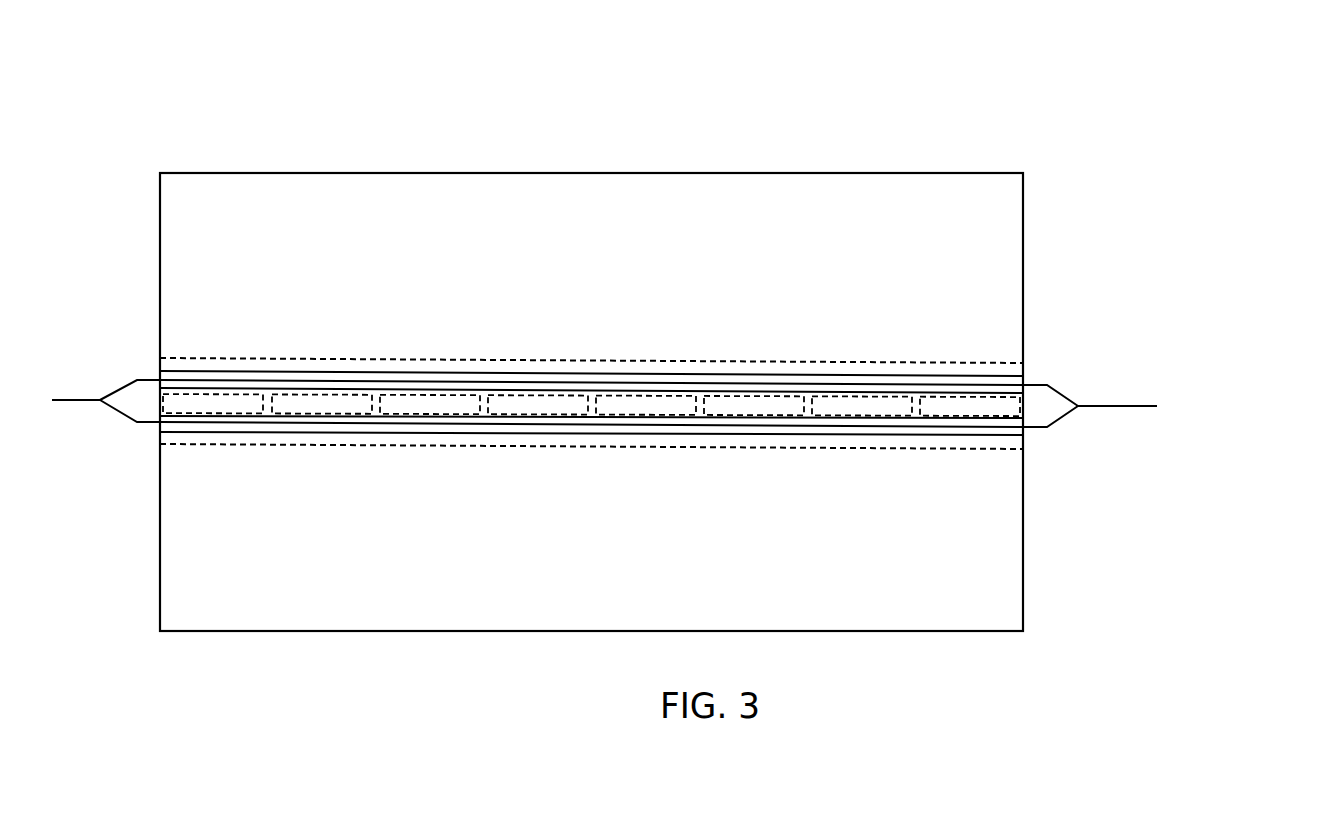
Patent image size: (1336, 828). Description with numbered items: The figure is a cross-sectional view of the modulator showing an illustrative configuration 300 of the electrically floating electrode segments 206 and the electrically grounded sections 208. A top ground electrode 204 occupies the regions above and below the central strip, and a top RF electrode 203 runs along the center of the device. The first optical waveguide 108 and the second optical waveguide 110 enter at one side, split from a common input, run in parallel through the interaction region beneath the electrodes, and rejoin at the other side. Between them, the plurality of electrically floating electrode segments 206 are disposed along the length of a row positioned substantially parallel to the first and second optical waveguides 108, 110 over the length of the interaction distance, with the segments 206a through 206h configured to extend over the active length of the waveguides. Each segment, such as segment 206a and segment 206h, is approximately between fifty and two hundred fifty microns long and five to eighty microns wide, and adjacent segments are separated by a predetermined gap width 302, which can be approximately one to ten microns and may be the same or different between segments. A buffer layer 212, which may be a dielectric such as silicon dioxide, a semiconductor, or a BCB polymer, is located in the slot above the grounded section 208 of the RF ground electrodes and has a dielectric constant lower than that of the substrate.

The configuration 300 is at (653, 108).
The top ground electrode 204 is at (988, 224).
The top RF electrode 203 is at (985, 392).
The electrically floating electrode segments 206 is at (742, 404).
The segment 206a is at (948, 407).
The segment 206h is at (213, 400).
The grounded section 208 is at (937, 365).
The buffer layer 212 is at (1003, 431).
The first optical waveguide 108 is at (157, 379).
The second optical waveguide 110 is at (157, 424).
The gap width 302 is at (806, 402).